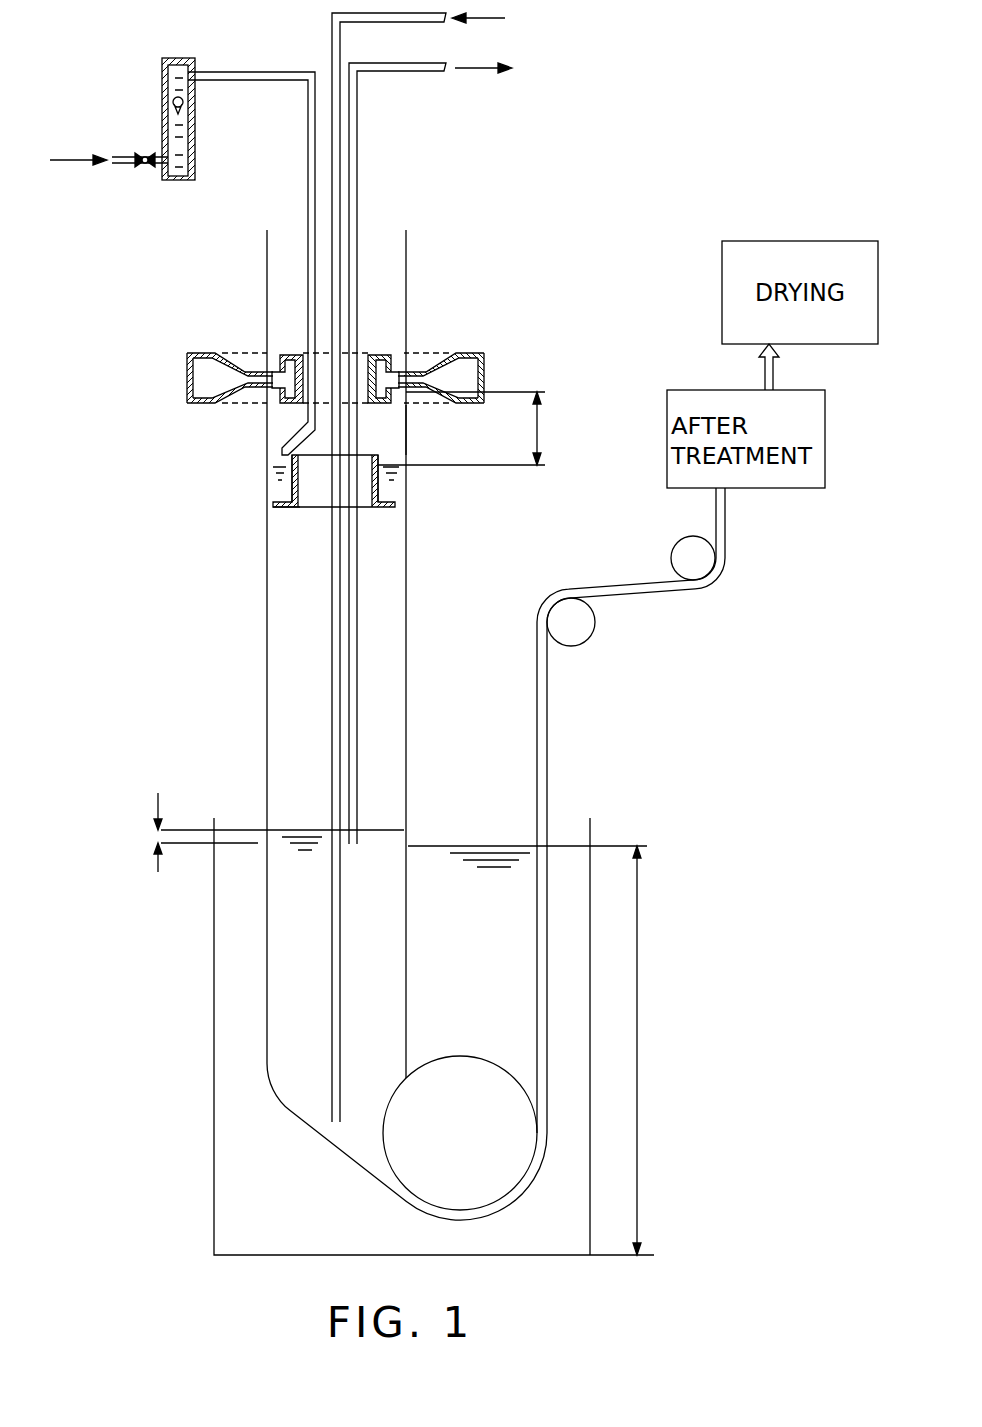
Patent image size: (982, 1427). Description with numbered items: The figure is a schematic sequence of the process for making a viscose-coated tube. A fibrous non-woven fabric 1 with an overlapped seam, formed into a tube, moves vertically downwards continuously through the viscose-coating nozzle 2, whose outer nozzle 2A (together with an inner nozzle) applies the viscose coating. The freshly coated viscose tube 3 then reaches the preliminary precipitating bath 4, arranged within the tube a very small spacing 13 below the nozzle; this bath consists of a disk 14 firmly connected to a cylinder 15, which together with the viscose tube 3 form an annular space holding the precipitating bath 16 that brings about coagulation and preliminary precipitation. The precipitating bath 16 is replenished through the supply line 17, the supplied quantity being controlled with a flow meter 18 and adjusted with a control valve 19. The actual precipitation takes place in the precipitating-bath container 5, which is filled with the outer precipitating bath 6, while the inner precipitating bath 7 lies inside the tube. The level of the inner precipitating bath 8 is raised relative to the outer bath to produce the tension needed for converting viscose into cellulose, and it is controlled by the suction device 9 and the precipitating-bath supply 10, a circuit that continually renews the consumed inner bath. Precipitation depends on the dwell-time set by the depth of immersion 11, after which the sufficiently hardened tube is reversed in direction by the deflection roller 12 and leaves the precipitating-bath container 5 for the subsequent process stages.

The fibrous non-woven fabric 1 is at (406, 288).
The viscose-coating nozzle 2 is at (390, 357).
The outer nozzle 2A is at (485, 367).
The viscose tube 3 is at (407, 440).
The preliminary precipitating bath 4 is at (270, 485).
The precipitating-bath container 5 is at (214, 1103).
The outer precipitating bath 6 is at (226, 935).
The inner precipitating bath 7 is at (289, 973).
The level of the inner precipitating bath 8 is at (157, 832).
The suction device 9 is at (420, 71).
The precipitating-bath supply 10 is at (422, 18).
The depth of immersion 11 is at (638, 1005).
The deflection roller 12 is at (457, 1195).
The spacing 13 is at (540, 432).
The disk 14 is at (275, 503).
The cylinder 15 is at (288, 477).
The precipitating bath 16 is at (398, 492).
The supply line 17 is at (245, 72).
The flow meter 18 is at (172, 105).
The control valve 19 is at (143, 167).